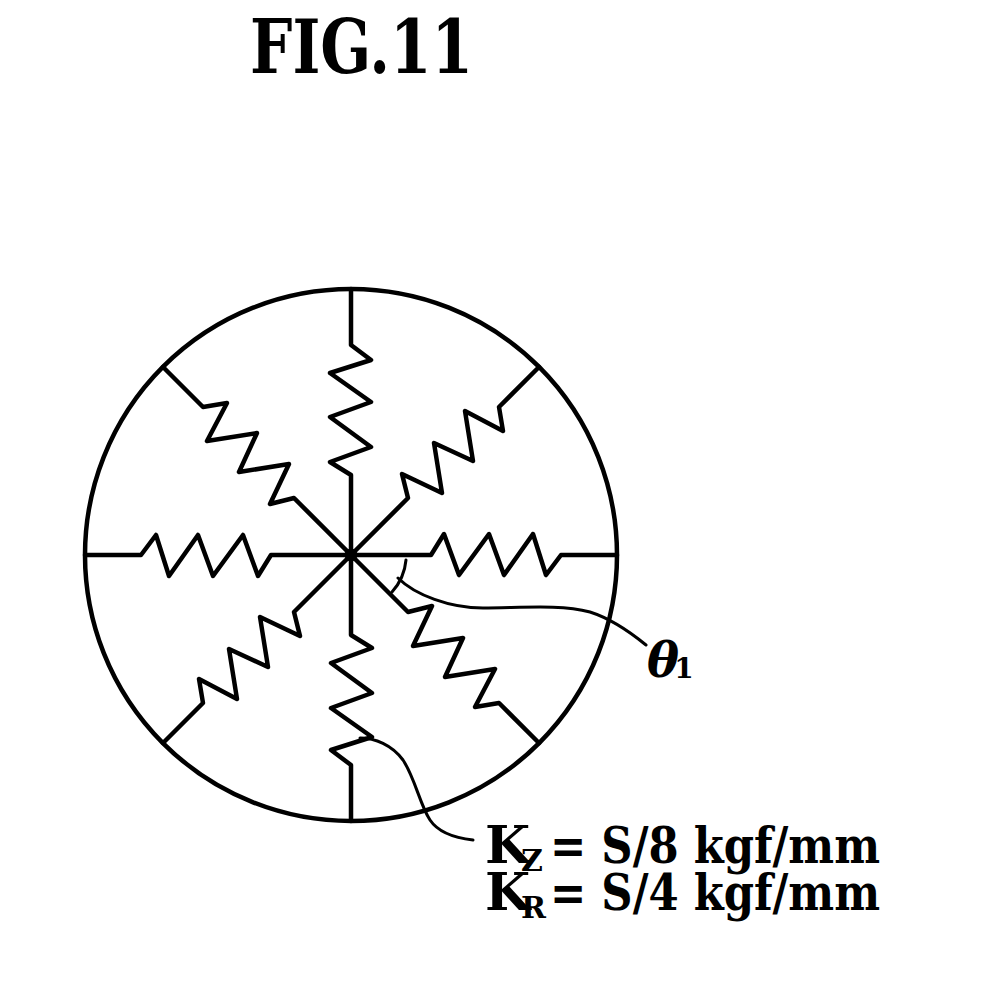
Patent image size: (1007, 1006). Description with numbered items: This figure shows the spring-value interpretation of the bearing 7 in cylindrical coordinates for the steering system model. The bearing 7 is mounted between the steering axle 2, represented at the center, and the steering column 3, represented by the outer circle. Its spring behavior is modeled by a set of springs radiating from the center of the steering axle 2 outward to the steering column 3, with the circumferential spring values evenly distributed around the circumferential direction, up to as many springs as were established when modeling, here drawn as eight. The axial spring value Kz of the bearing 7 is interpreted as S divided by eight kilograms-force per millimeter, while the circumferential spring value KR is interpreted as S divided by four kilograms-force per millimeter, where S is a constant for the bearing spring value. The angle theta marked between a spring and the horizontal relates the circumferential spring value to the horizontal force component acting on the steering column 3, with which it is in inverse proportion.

The steering axle 2 is at (347, 558).
The steering column 3 is at (607, 471).
The bearing 7 is at (347, 552).